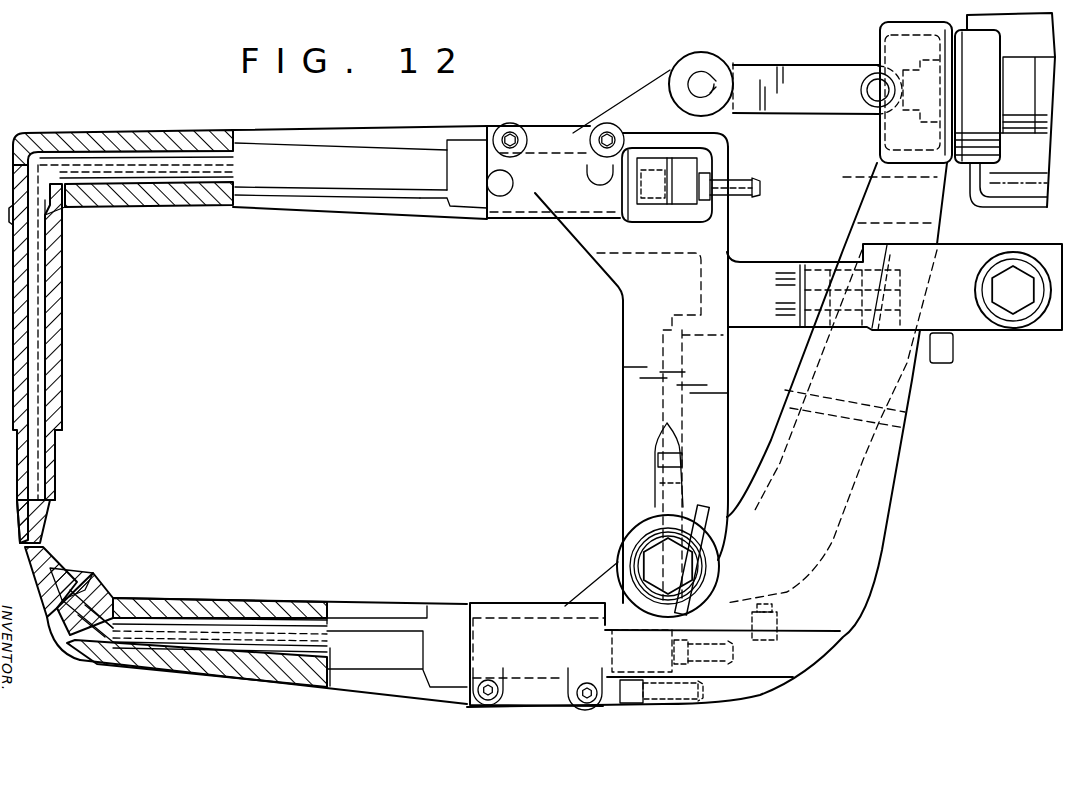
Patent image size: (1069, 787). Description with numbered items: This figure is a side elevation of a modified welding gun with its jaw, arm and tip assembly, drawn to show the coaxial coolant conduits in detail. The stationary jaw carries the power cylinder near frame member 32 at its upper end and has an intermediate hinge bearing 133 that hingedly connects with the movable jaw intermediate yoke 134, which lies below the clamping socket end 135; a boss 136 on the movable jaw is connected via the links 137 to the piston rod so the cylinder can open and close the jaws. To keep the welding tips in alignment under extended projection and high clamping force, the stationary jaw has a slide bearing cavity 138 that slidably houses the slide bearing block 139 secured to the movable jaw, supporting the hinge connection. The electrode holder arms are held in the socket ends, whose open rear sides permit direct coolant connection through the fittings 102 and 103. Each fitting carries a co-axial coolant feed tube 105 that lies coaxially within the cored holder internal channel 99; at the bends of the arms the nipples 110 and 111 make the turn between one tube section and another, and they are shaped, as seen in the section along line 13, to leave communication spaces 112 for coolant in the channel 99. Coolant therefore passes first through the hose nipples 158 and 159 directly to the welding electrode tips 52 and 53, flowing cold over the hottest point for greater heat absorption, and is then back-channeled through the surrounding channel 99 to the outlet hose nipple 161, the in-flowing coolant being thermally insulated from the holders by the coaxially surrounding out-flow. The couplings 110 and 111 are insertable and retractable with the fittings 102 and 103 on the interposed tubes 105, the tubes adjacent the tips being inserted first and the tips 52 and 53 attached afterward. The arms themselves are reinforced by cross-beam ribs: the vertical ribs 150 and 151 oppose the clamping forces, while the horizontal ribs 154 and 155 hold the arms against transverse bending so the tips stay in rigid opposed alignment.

The section line 13- 13 is at (136, 245).
The frame member 32 is at (1017, 194).
The welding electrode tip 52 is at (31, 498).
The welding electrode tip 53 is at (40, 547).
The holder internal channel 99 is at (222, 205).
The fitting 102 is at (738, 218).
The fitting 103 is at (627, 704).
The co-axial coolant feed tube 105 is at (218, 160).
The nipple 110 is at (121, 324).
The nipple 111 is at (107, 617).
The communication space 112 is at (135, 325).
The hinge bearing 133 is at (594, 594).
The movable jaw intermediate yoke 134 is at (628, 489).
The clamping socket end 135 is at (555, 130).
The boss 136 is at (708, 52).
The link 137 is at (817, 77).
The slide bearing cavity 138 is at (903, 402).
The slide bearing block 139 is at (833, 264).
The vertical reinforcing rib 150 is at (350, 133).
The vertical reinforcing rib 151 is at (337, 207).
The horizontal reinforcing rib 154 is at (396, 622).
The horizontal reinforcing rib 155 is at (415, 195).
The hose nipple 158 is at (747, 183).
The hose nipple 159 is at (738, 669).
The outlet hose nipple 161 is at (693, 708).